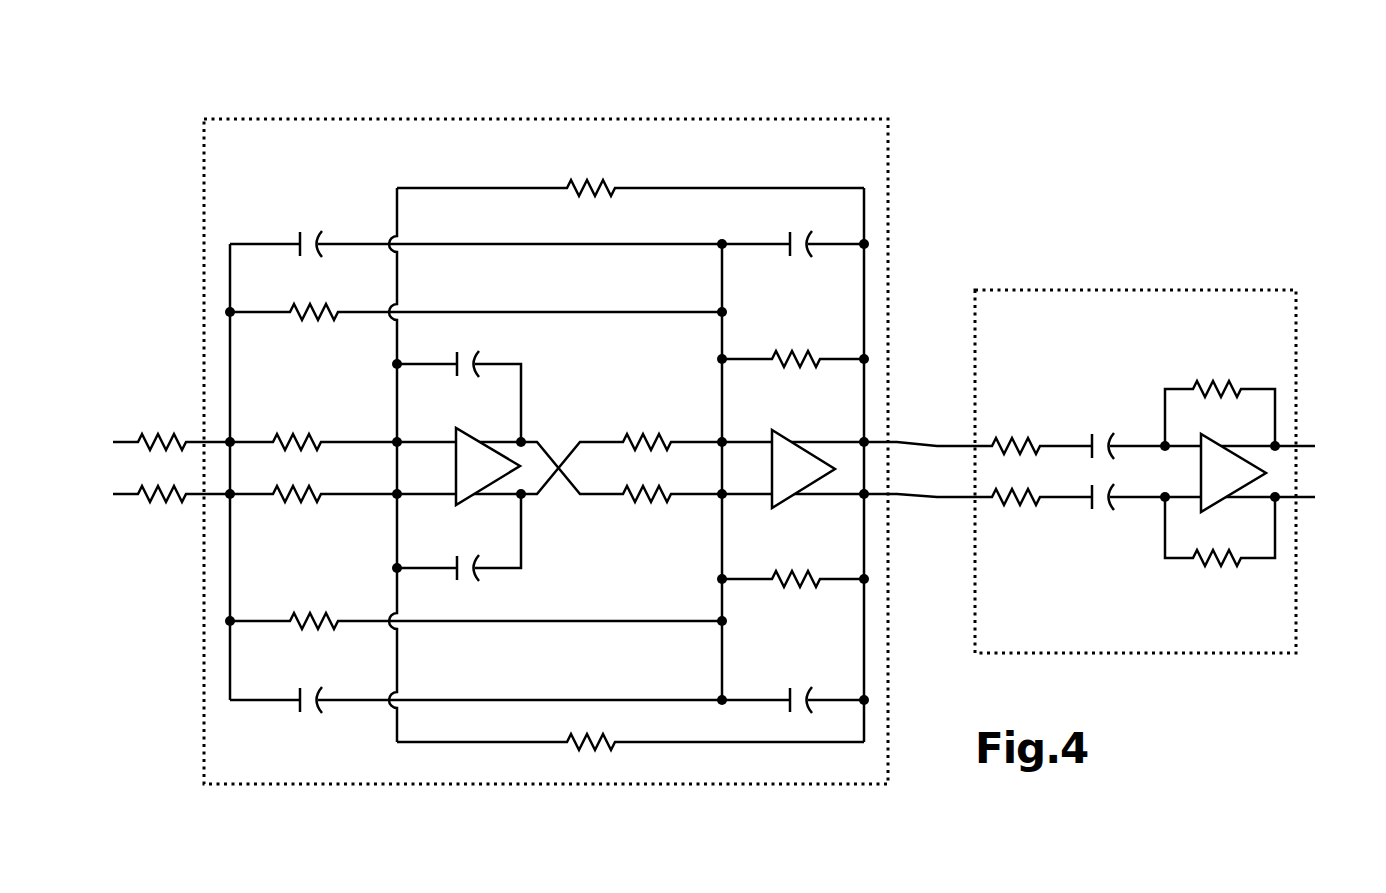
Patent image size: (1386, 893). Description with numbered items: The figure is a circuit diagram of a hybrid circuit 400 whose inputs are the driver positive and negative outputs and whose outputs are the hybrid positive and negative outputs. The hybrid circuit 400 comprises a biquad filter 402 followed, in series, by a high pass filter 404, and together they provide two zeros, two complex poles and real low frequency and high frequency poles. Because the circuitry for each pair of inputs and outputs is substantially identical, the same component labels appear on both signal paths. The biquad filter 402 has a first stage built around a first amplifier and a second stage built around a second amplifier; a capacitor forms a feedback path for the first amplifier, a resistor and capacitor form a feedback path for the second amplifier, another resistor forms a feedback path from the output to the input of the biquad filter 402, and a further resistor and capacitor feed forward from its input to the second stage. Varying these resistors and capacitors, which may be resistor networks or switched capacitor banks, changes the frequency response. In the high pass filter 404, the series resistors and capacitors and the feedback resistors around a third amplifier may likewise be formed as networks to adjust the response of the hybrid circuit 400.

The hybrid circuit 400 is at (838, 58).
The biquad filter 402 is at (408, 118).
The high pass filter 404 is at (1015, 290).